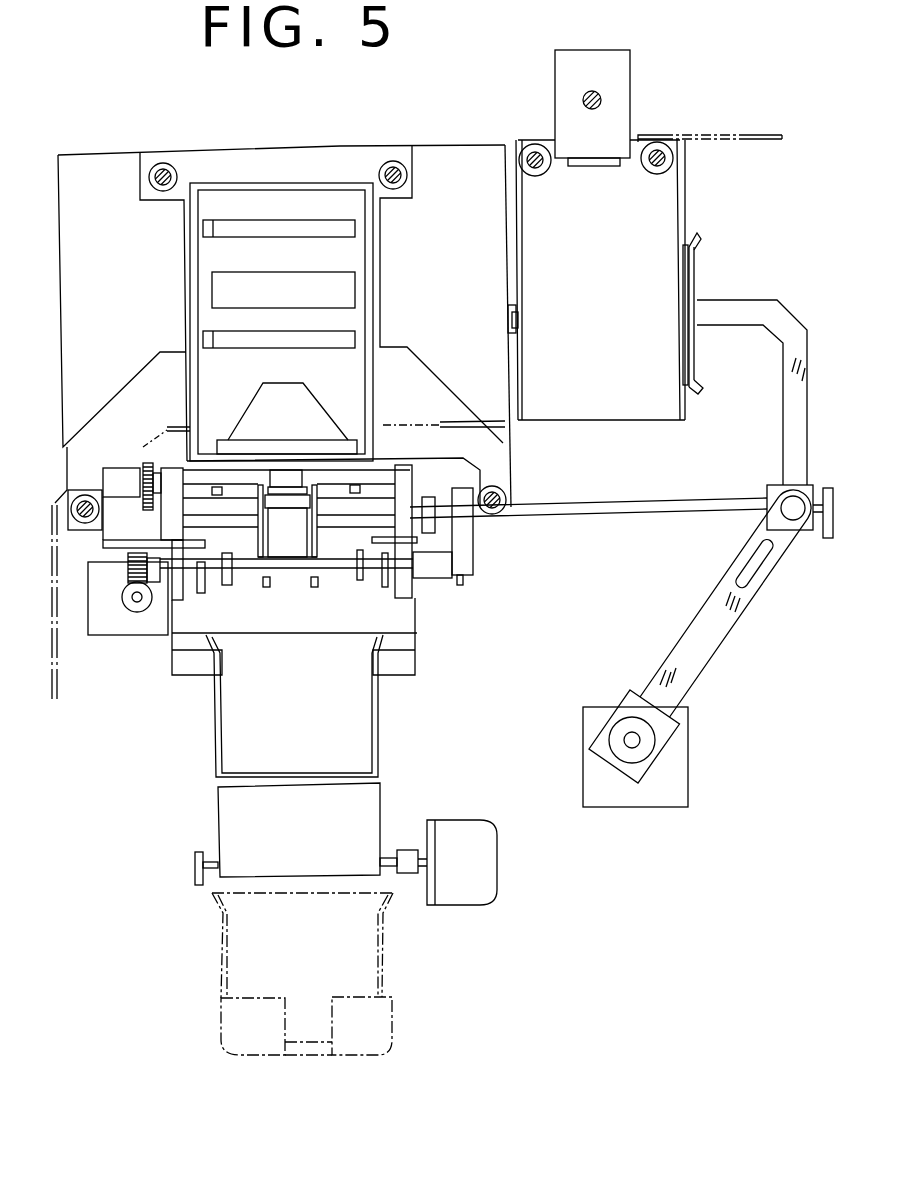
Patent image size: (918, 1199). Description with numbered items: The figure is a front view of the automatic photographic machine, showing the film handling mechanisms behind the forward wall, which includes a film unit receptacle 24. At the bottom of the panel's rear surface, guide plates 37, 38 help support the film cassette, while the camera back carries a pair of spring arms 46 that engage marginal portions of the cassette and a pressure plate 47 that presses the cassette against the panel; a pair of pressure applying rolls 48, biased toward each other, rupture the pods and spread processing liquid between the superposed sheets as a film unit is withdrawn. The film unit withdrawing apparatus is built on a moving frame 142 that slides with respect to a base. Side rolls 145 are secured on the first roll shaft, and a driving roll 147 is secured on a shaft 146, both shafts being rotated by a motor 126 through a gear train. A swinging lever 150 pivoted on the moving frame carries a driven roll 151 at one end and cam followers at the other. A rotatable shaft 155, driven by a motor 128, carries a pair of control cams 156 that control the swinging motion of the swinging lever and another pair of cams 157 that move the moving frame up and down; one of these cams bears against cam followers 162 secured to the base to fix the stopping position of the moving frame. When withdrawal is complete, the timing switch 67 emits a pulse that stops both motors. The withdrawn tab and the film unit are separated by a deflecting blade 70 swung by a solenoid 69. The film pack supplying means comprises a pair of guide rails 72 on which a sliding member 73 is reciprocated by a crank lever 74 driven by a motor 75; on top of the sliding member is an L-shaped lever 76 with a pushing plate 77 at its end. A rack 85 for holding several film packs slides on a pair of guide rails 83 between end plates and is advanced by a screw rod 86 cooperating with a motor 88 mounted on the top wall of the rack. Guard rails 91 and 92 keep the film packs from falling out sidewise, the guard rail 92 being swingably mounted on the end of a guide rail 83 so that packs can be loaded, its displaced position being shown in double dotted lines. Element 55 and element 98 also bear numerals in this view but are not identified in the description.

The film unit receptacle 24 is at (232, 1040).
The guide plate 37 is at (427, 423).
The guide plate 38 is at (165, 430).
The spring arms 46 is at (240, 230).
The pressure plate 47 is at (302, 282).
The pressure applying rolls 48 is at (268, 447).
The drive housing 55 is at (423, 630).
The timing switch 67 is at (470, 553).
The solenoid 69 is at (480, 862).
The deflecting blade 70 is at (320, 842).
The guide rails 72 is at (620, 511).
The sliding member 73 is at (768, 495).
The crank lever 74 is at (710, 642).
The motor 75 is at (660, 793).
The L-shaped lever 76 is at (793, 405).
The pushing plate 77 is at (695, 265).
The guide rails 83 is at (646, 168).
The rack 85 is at (620, 404).
The screw rod 86 is at (600, 101).
The motor 88 is at (617, 73).
The guard rail 91 is at (518, 320).
The guard rail 92 is at (757, 135).
The chute 98 is at (320, 741).
The motor 126 is at (122, 477).
The motor 128 is at (135, 612).
The moving frame 142 is at (163, 527).
The side rolls 145 is at (217, 485).
The shaft 146 is at (388, 477).
The driving roll 147 is at (293, 473).
The swinging lever 150 is at (262, 540).
The driven roll 151 is at (288, 494).
The rotatable shaft 155 is at (297, 570).
The control cams 156 is at (246, 589).
The cams 157 is at (202, 594).
The cam followers 162 is at (103, 541).